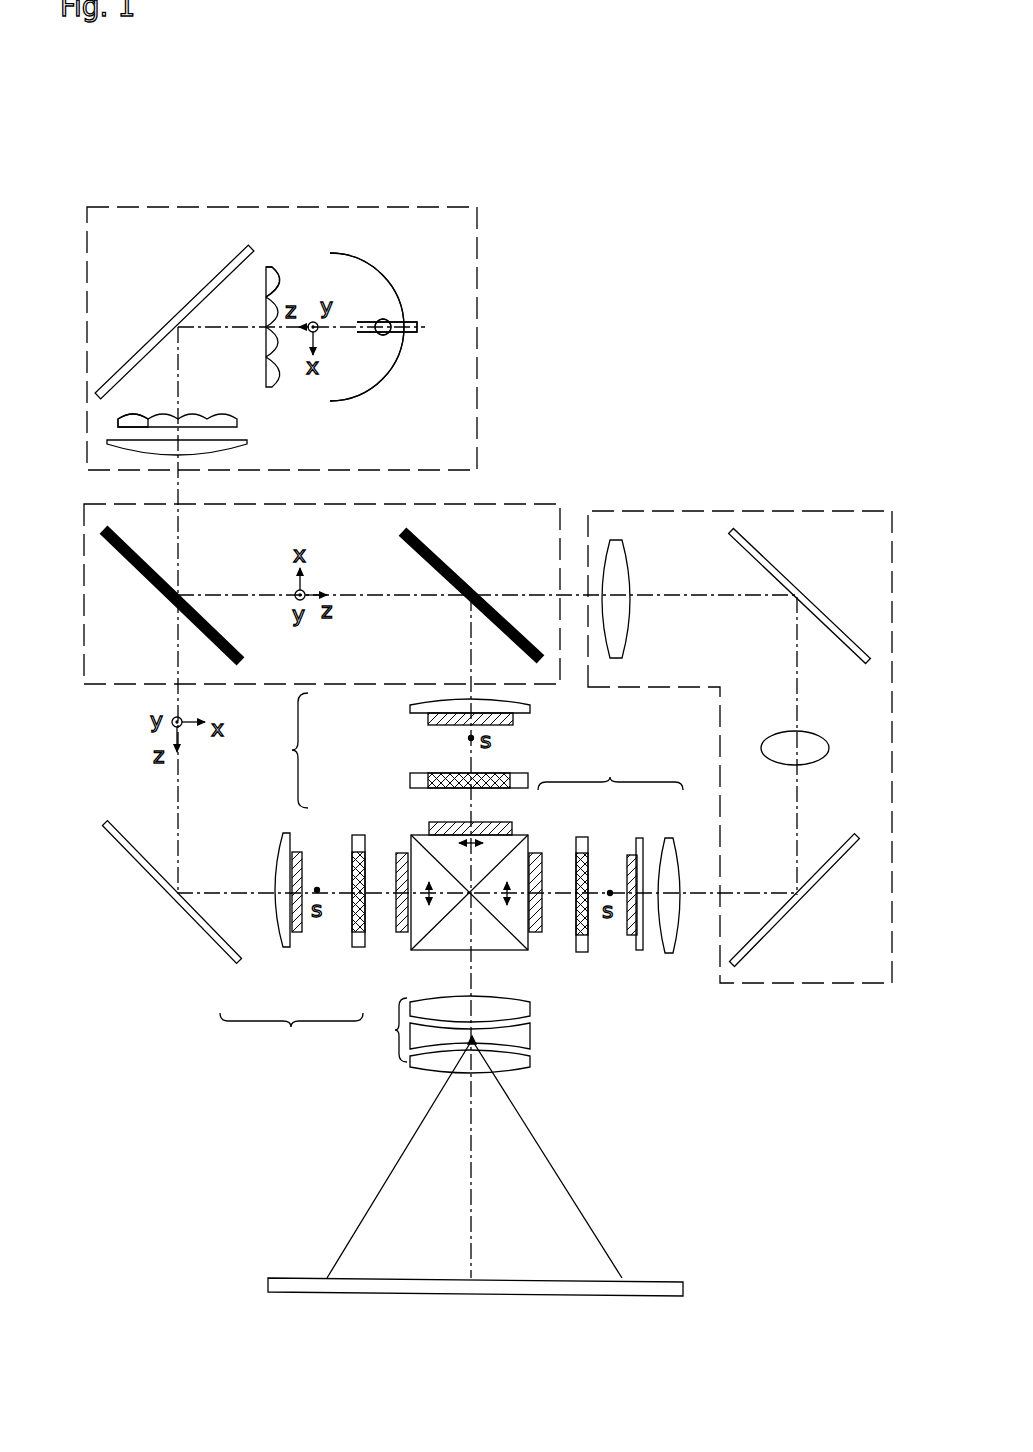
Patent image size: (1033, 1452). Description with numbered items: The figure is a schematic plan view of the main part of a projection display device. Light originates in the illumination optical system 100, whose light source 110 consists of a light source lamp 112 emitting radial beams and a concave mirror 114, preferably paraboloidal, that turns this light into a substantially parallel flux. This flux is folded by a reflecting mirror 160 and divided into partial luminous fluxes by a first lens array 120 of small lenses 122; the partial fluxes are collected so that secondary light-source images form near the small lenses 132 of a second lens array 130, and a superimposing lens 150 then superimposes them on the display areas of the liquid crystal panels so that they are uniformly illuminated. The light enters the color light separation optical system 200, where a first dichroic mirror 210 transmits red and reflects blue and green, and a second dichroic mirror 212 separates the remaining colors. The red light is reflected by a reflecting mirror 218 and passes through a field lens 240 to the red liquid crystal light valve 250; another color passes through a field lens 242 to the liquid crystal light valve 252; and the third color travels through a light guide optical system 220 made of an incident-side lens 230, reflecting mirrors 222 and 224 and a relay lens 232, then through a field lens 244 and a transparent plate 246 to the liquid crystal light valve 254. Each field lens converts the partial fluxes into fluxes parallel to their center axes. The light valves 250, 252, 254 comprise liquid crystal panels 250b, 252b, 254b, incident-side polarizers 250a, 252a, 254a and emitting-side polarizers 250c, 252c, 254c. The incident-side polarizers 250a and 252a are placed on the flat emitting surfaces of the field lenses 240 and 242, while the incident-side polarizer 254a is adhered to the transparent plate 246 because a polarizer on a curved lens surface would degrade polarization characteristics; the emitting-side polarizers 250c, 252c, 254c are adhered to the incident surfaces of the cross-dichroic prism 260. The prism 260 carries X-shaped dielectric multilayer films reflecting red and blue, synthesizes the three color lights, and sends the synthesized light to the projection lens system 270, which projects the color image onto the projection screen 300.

The illumination optical system 100 is at (378, 207).
The light source 110 is at (383, 257).
The light source lamp 112 is at (397, 343).
The concave mirror 114 is at (367, 395).
The first lens array 120 is at (273, 261).
The small lens 122 is at (278, 268).
The second lens array 130 is at (245, 423).
The small lens 132 is at (133, 413).
The superimposing lens 150 is at (247, 443).
The reflecting mirror 160 is at (225, 268).
The color light separation optical system 200 is at (531, 504).
The first dichroic mirror 210 is at (124, 555).
The dichroic mirror 212 is at (425, 542).
The reflecting mirror 218 is at (192, 923).
The light guide optical system 220 is at (735, 510).
The reflecting mirror 222 is at (752, 544).
The reflecting mirror 224 is at (847, 853).
The incident-side lens 230 is at (625, 542).
The relay lens 232 is at (828, 742).
The field lens 240 is at (282, 850).
The field lens 242 is at (530, 711).
The field lens 244 is at (670, 953).
The transparent plate 246 is at (638, 953).
The liquid crystal light valve 250 is at (314, 950).
The incident-side polarizer 250a is at (295, 950).
The liquid crystal panel 250b is at (360, 950).
The emitting-side polarizer 250c is at (403, 940).
The liquid crystal light valve 252 is at (380, 761).
The incident-side polarizer 252a is at (428, 720).
The liquid crystal panel 252b is at (410, 780).
The emitting-side polarizer 252c is at (429, 826).
The liquid crystal light valve 254 is at (608, 844).
The incident-side polarizer 254a is at (627, 855).
The liquid crystal panel 254b is at (581, 837).
The emitting-side polarizer 254c is at (533, 852).
The cross-dichroic prism 260 is at (523, 952).
The projection lens system 270 is at (395, 1030).
The projection screen 300 is at (287, 1278).